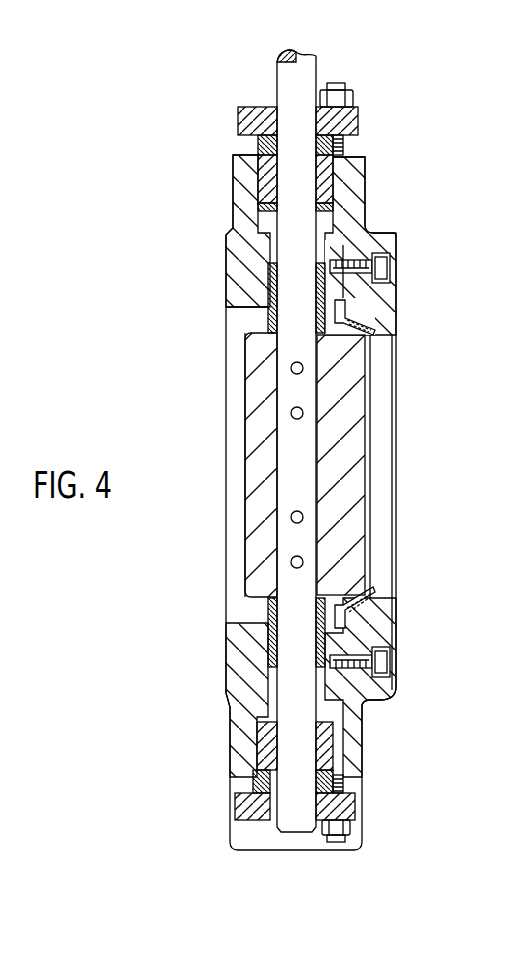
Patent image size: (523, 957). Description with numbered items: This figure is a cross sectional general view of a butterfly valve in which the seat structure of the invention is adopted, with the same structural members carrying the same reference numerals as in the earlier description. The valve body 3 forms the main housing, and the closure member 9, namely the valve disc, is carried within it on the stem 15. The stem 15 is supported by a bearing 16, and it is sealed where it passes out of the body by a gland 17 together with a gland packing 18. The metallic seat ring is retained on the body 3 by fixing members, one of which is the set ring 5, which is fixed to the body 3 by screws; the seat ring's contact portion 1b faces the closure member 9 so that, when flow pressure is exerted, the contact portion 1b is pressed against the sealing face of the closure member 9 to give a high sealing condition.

The contact portion 1b is at (352, 592).
The body 3 is at (348, 737).
The set ring 5 is at (373, 633).
The closure member 9 is at (258, 440).
The stem 15 is at (288, 345).
The bearing 16 is at (272, 292).
The gland 17 is at (245, 121).
The gland packing 18 is at (270, 188).